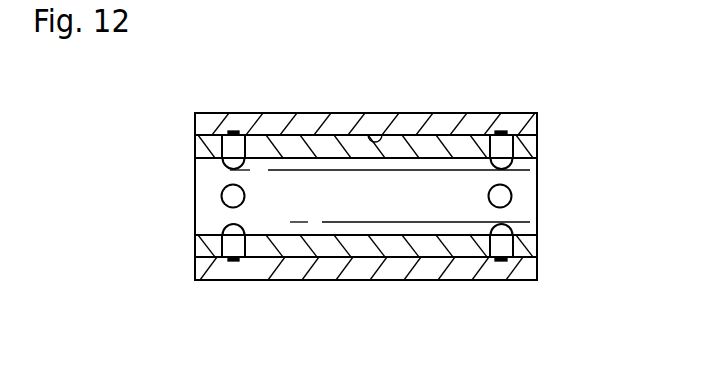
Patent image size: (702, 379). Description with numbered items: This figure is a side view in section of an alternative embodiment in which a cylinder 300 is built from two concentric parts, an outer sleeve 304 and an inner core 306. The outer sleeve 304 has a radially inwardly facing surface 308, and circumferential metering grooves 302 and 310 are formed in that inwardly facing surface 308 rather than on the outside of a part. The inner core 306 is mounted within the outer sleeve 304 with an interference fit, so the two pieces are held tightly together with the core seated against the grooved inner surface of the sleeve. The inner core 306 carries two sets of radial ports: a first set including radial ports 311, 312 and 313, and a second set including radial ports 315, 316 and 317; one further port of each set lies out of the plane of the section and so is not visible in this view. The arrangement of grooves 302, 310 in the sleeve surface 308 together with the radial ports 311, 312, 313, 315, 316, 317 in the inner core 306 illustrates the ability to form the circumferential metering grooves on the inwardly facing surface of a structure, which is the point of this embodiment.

The cylinder 300 is at (432, 79).
The circumferential metering groove 302 is at (502, 131).
The outer sleeve 304 is at (342, 122).
The inner core 306 is at (310, 140).
The radially inwardly facing surface 308 is at (385, 137).
The circumferential metering groove 310 is at (236, 131).
The radial port 311 is at (203, 113).
The radial port 312 is at (228, 195).
The radial port 313 is at (230, 245).
The radial port 315 is at (505, 245).
The radial port 316 is at (503, 197).
The radial port 317 is at (501, 147).